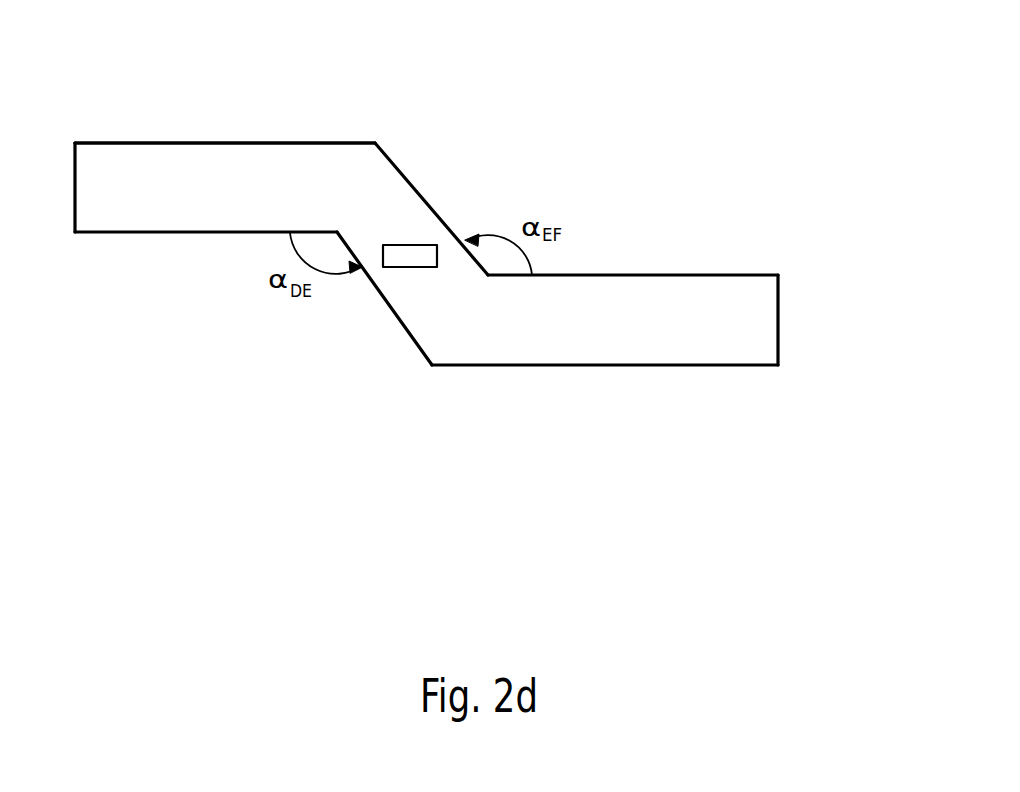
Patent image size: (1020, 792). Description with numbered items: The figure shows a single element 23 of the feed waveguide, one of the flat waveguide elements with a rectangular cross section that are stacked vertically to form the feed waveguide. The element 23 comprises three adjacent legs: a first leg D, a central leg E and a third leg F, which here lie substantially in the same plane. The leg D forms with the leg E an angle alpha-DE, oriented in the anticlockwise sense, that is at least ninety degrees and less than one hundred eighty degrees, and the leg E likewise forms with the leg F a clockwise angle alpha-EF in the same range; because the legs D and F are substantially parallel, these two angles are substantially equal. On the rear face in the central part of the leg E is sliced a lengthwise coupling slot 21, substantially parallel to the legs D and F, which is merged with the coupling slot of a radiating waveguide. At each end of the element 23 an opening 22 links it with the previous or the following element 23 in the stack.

The coupling slot 21 is at (405, 245).
The opening 22 is at (95, 242).
The element of the feed waveguide 23 is at (135, 142).
The first leg D is at (230, 142).
The central leg E is at (387, 312).
The third leg F is at (605, 275).